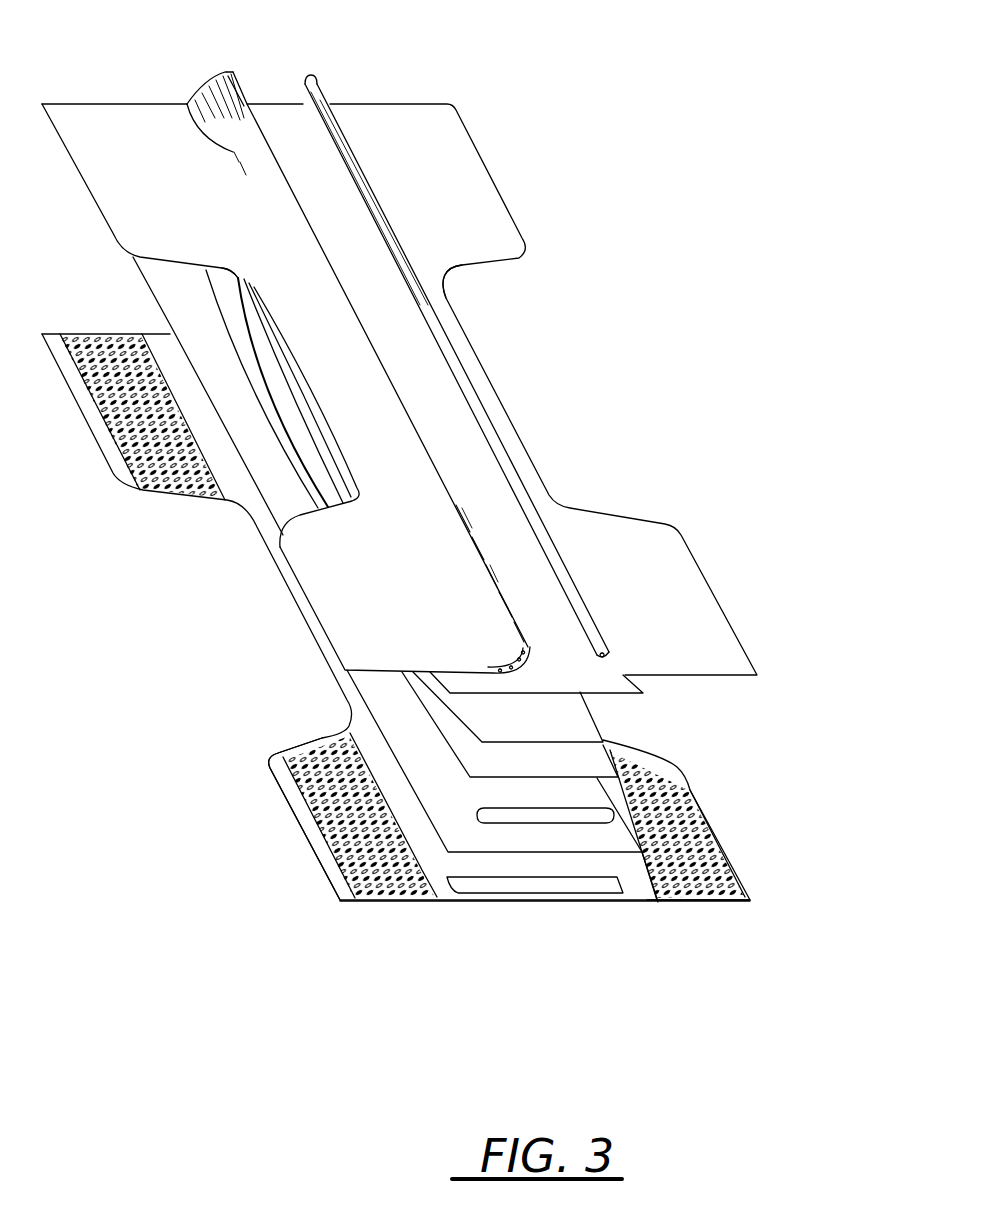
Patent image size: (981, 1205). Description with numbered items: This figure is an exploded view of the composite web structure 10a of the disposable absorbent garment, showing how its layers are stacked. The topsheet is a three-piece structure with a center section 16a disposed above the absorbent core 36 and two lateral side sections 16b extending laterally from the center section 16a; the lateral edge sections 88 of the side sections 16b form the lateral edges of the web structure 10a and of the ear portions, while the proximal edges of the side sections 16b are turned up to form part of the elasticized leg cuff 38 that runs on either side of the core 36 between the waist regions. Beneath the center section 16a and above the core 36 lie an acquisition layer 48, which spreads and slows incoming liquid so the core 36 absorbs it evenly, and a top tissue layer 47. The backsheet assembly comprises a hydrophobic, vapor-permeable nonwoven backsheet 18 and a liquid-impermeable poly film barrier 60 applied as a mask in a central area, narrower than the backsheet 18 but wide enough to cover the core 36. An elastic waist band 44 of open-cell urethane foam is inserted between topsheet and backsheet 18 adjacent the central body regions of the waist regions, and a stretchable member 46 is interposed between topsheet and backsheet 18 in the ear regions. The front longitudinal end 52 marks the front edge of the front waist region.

The composite web structure 10a is at (660, 306).
The center section 16a is at (486, 490).
The lateral side sections 16b is at (233, 153).
The backsheet 18 is at (438, 890).
The absorbent core 36 is at (593, 798).
The leg cuff 38 is at (243, 97).
The elastic waist band 44 is at (563, 885).
The stretchable member 46 is at (377, 902).
The top tissue layer 47 is at (597, 762).
The acquisition layer 48 is at (585, 727).
The front longitudinal end 52 is at (703, 903).
The film barrier 60 is at (645, 903).
The lateral edge sections 88 is at (173, 263).